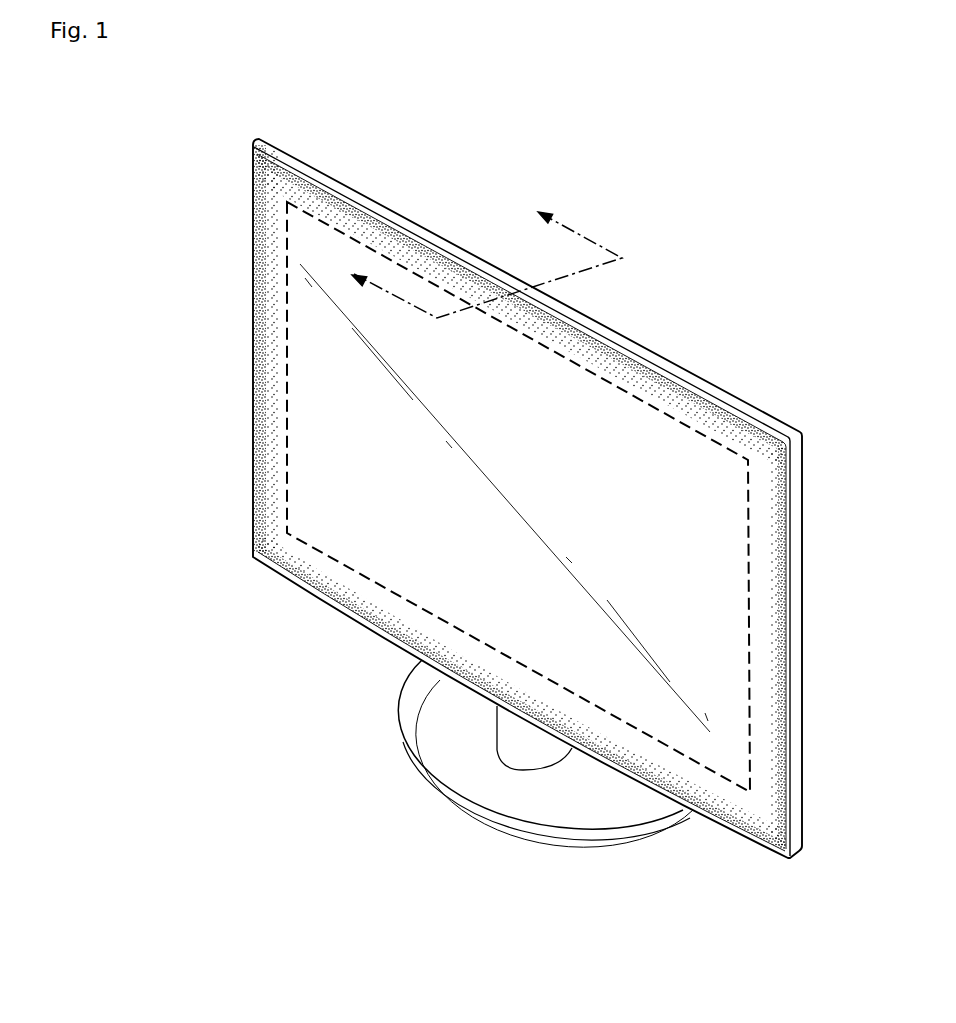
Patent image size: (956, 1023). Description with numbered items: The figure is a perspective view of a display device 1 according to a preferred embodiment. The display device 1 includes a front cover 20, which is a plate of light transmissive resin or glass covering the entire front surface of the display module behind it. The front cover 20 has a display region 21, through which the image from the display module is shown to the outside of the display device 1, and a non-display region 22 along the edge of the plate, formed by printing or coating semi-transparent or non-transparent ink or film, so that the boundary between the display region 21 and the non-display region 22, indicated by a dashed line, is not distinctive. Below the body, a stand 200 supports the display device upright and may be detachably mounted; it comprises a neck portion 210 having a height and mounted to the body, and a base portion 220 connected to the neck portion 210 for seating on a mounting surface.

The display device 1 is at (445, 533).
The front cover 20 is at (445, 468).
The display region 21 is at (310, 310).
The non-display region 22 is at (298, 178).
The stand 200 is at (545, 824).
The neck portion 210 is at (522, 752).
The base portion 220 is at (601, 822).